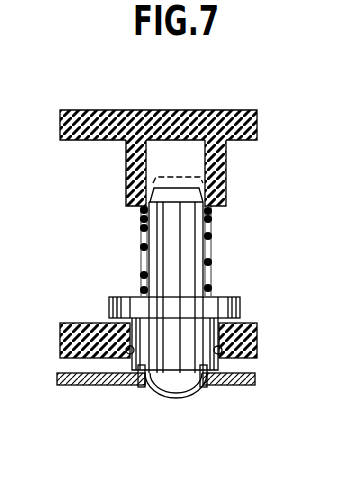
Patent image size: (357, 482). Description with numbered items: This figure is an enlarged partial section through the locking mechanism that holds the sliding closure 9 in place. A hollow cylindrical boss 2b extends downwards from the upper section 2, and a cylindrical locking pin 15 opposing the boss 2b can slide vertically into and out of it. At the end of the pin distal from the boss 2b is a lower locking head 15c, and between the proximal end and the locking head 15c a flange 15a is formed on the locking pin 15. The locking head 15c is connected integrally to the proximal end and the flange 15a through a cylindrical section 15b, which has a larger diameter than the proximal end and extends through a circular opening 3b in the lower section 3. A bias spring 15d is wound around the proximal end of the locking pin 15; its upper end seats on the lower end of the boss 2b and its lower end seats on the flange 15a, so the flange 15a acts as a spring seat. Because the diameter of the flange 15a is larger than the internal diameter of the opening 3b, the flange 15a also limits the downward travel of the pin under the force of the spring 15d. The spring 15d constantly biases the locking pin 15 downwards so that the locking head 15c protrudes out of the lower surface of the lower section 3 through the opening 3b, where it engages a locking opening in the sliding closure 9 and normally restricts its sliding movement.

The upper section 2 is at (162, 110).
The hollow cylindrical boss 2b is at (228, 178).
The bias spring 15d is at (212, 218).
The locking pin 15 is at (210, 305).
The flange 15a is at (112, 303).
The lower section 3 is at (258, 328).
The circular opening 3b is at (218, 352).
The cylindrical section 15b is at (120, 352).
The sliding closure 9 is at (139, 376).
The locking head 15c is at (183, 394).